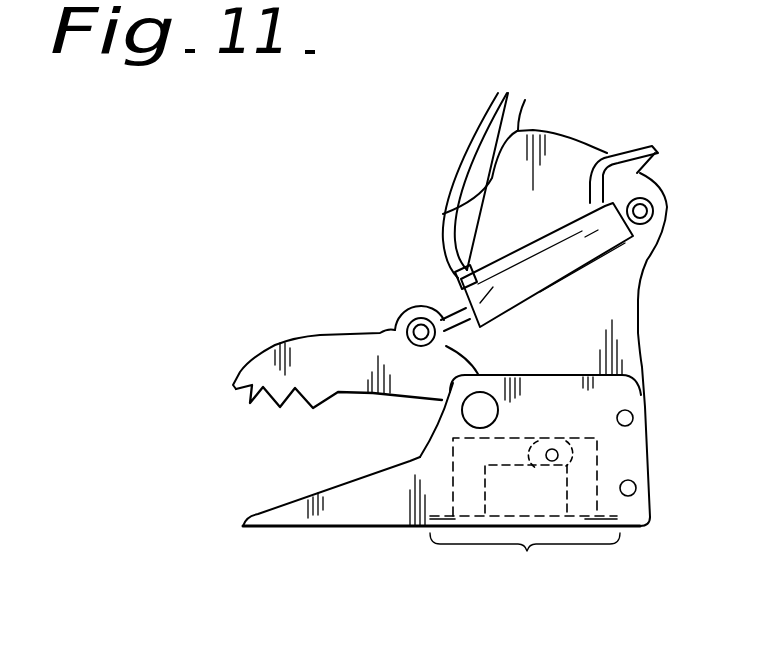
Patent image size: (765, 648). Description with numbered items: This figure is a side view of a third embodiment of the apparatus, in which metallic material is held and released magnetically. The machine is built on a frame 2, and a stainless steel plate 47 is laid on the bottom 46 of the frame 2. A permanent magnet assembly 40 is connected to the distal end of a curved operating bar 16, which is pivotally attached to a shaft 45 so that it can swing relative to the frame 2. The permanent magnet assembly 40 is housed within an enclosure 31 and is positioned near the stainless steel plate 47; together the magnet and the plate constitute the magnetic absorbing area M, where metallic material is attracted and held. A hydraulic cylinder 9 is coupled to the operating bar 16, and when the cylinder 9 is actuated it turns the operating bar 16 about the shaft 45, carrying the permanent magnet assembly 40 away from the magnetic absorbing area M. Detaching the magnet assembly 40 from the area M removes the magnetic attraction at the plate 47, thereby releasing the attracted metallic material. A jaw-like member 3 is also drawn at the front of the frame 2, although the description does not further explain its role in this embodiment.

The frame 2 is at (337, 513).
The gripping jaw 3 is at (250, 387).
The hydraulic cylinder 9 is at (517, 255).
The curved operating bar 16 is at (519, 431).
The enclosure 31 is at (597, 458).
The permanent magnet assembly 40 is at (510, 497).
The shaft 45 is at (477, 413).
The bottom 46 is at (423, 527).
The stainless steel plate 47 is at (593, 518).
The magnetic absorbing area M is at (525, 564).